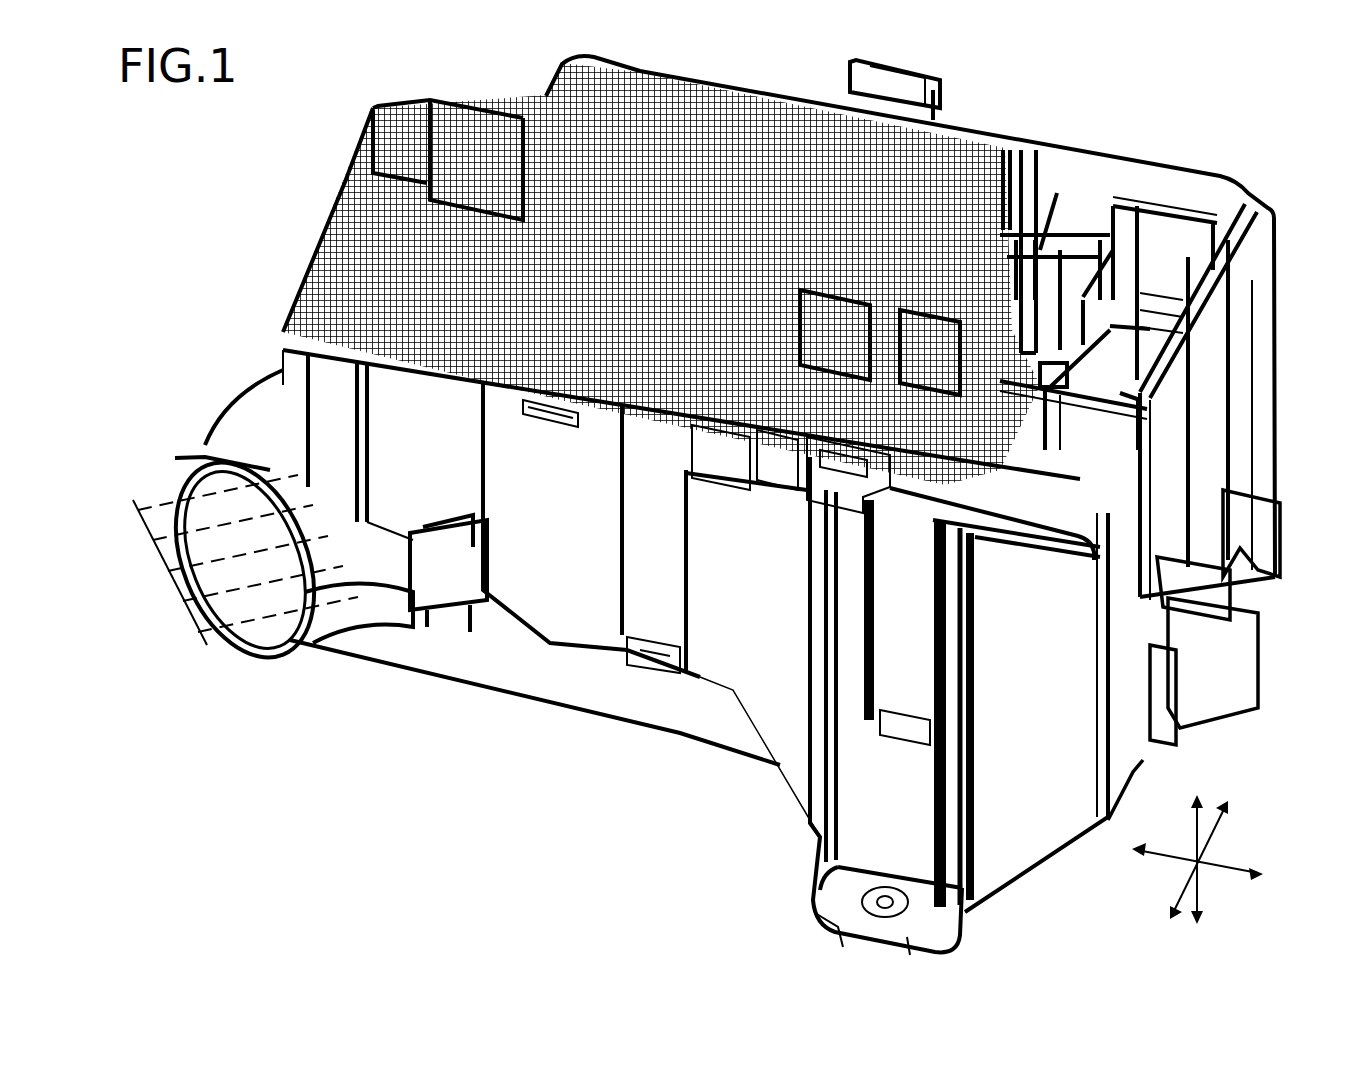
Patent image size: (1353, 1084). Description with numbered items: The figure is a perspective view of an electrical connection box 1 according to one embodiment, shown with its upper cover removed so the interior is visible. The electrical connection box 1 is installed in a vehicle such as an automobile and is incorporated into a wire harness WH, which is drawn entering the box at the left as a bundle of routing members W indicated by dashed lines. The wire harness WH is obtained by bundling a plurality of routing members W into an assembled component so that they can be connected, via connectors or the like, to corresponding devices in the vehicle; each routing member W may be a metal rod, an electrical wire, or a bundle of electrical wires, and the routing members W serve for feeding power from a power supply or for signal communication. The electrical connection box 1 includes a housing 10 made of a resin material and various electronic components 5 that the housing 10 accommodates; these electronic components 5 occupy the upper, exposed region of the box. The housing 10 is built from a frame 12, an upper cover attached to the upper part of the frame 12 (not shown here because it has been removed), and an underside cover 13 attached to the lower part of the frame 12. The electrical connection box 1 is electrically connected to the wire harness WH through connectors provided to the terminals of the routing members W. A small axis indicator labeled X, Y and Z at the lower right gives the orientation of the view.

The housing 10 is at (1203, 94).
The electronic components 5 is at (630, 75).
The underside cover 13 is at (593, 680).
The frame 12 is at (1038, 782).
The electrical connection box 1 is at (258, 357).
The wire harness WH is at (252, 262).
The routing members W is at (153, 494).
The X axis direction X is at (1184, 888).
The Y axis direction Y is at (1243, 870).
The Z axis direction Z is at (1196, 816).